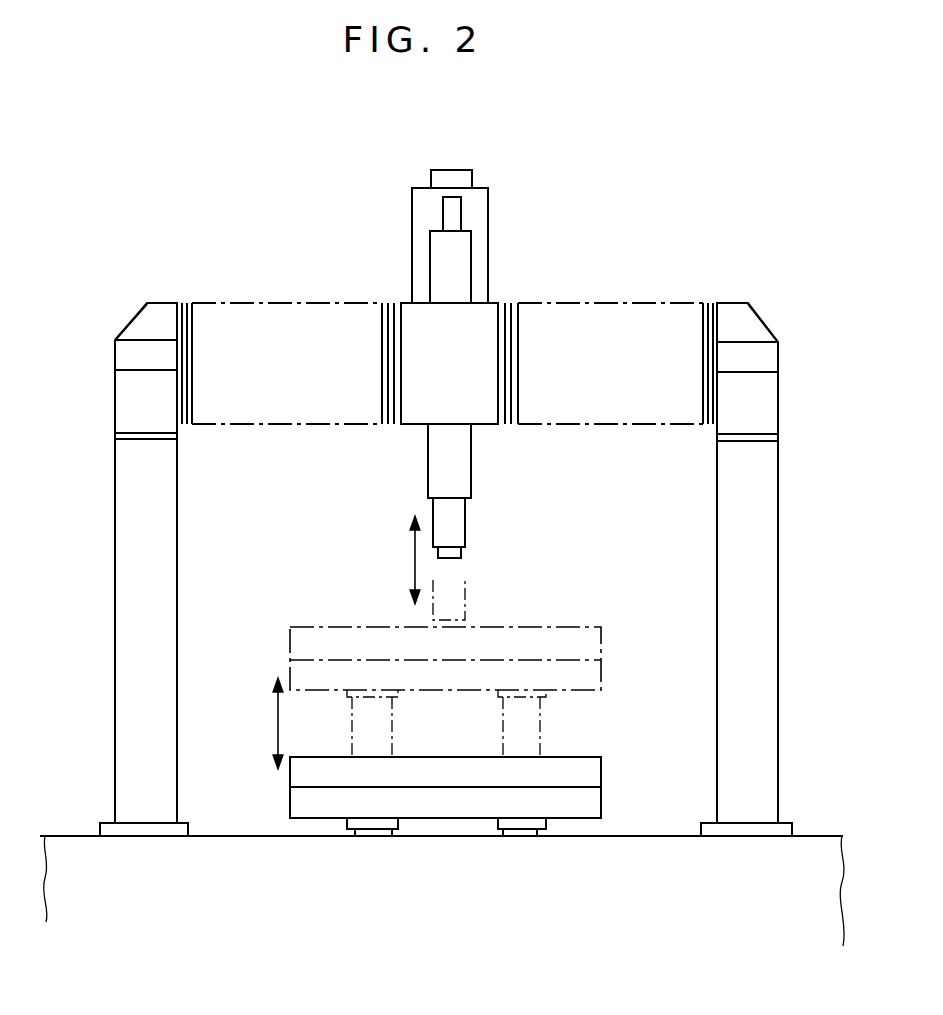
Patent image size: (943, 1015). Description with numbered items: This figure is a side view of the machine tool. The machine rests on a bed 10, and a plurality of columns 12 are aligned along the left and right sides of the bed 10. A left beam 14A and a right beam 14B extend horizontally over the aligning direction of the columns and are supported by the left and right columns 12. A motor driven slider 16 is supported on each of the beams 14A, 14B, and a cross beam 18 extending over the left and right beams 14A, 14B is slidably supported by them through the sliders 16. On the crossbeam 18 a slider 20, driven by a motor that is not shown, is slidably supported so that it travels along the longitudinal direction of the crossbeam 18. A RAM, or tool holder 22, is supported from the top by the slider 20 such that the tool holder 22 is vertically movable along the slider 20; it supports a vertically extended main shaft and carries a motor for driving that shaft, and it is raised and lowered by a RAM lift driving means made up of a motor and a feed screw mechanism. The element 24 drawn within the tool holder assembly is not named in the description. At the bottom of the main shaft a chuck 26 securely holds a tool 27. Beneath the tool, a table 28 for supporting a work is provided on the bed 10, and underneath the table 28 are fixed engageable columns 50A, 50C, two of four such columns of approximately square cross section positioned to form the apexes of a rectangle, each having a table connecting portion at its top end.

The bed 10 is at (229, 831).
The columns 12 is at (158, 547).
The left beam 14A is at (130, 402).
The right beam 14B is at (760, 405).
The slider 16 is at (147, 317).
The cross beam 18 is at (280, 303).
The slider 20 is at (477, 315).
The tool holder 22 is at (423, 209).
The piston rod 24 is at (457, 265).
The chuck 26 is at (457, 518).
The tool 27 is at (457, 558).
The table 28 is at (318, 768).
The engageable column 50A is at (392, 832).
The engageable column 50C is at (543, 830).